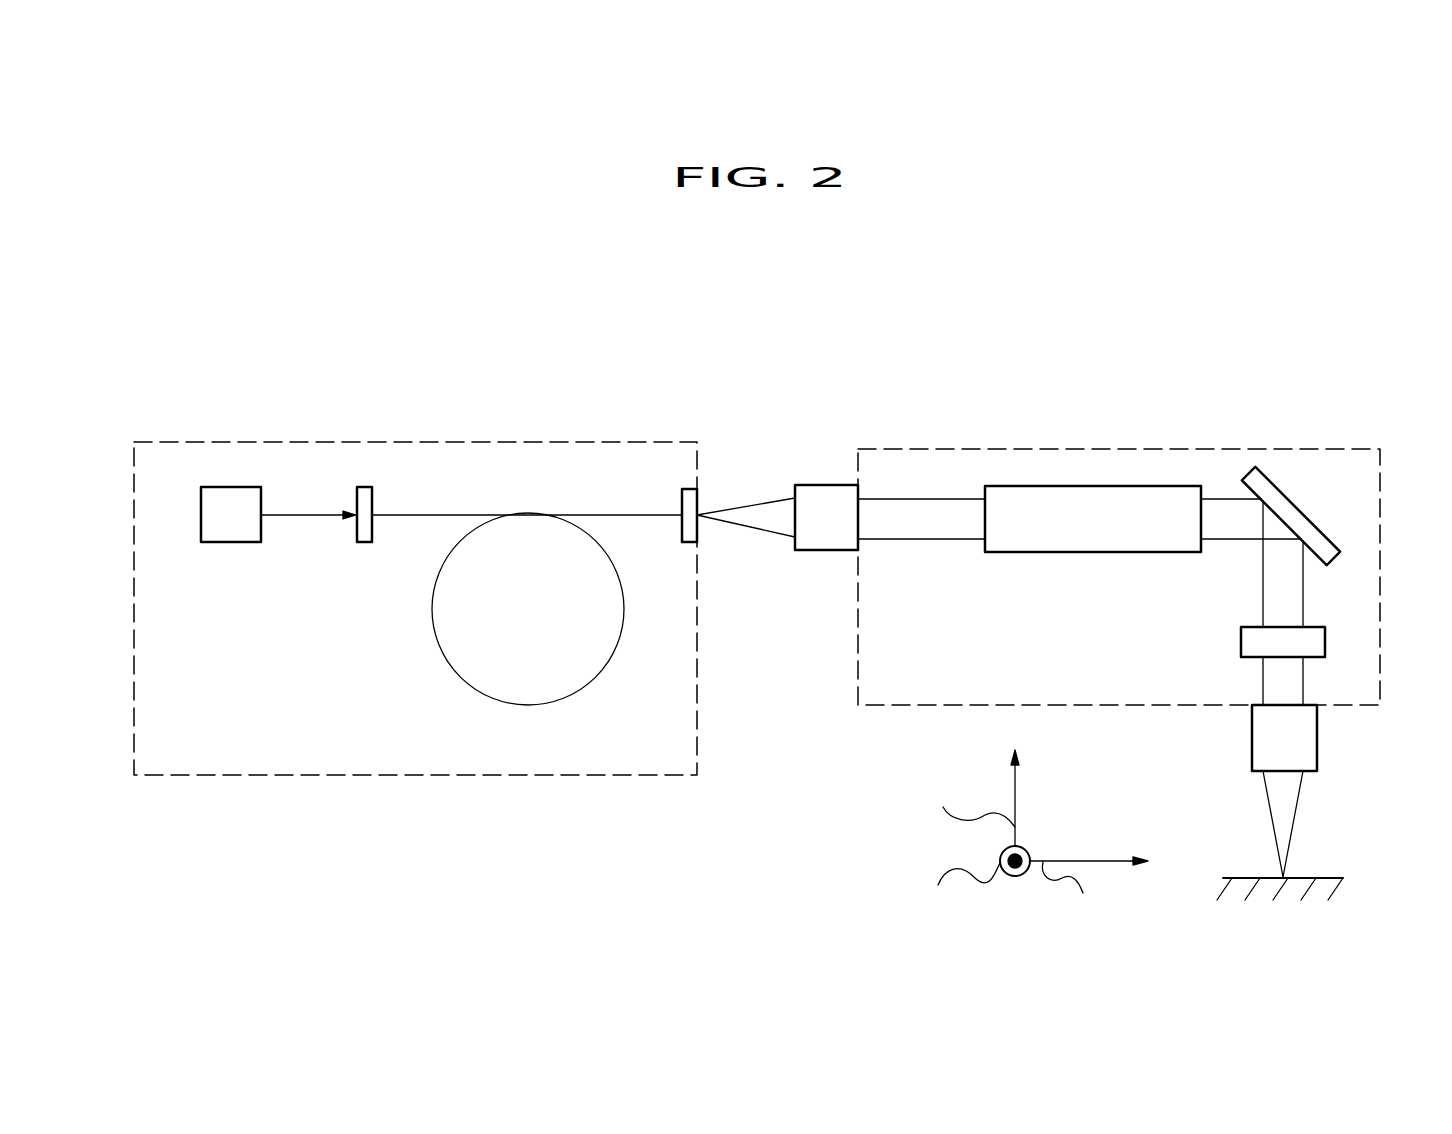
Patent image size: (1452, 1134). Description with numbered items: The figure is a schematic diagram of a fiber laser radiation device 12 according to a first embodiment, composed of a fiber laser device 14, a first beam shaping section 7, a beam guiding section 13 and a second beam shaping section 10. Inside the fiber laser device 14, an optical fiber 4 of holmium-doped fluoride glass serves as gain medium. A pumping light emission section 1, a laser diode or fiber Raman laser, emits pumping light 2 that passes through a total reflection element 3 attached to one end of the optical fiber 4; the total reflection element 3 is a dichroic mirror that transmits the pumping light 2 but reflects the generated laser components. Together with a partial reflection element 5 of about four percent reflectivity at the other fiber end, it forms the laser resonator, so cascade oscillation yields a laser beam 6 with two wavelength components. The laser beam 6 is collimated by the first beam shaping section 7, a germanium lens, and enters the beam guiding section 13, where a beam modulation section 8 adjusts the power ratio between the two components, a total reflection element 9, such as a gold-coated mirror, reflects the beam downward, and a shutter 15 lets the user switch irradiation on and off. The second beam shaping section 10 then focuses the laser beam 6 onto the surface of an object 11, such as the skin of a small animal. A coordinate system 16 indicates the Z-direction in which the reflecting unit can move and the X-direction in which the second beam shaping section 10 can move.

The pumping light emission section 1 is at (230, 487).
The pumping light 2 is at (312, 516).
The total reflection element 3 is at (370, 487).
The optical fiber 4 is at (445, 660).
The partial reflection element 5 is at (688, 489).
The laser beam 6 is at (747, 527).
The first beam shaping section 7 is at (823, 485).
The beam modulation section 8 is at (1075, 486).
The total reflection element 9 is at (1300, 508).
The second beam shaping section 10 is at (1317, 735).
The object 11 is at (1323, 877).
The fiber laser radiation device 12 is at (814, 252).
The beam guiding section 13 is at (898, 705).
The fiber laser device 14 is at (245, 775).
The shutter 15 is at (1241, 638).
The coordinate system 16 is at (1033, 866).